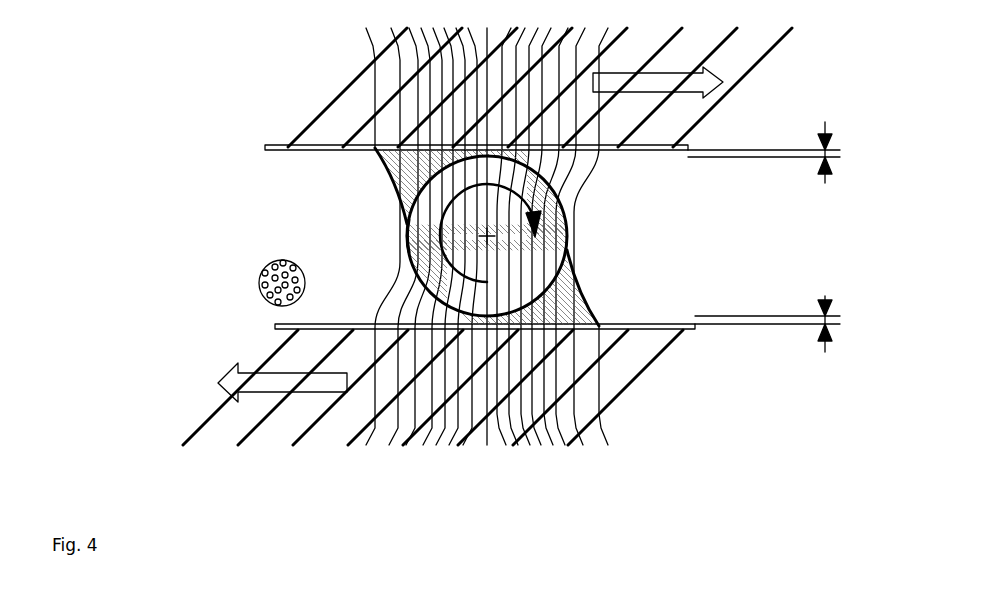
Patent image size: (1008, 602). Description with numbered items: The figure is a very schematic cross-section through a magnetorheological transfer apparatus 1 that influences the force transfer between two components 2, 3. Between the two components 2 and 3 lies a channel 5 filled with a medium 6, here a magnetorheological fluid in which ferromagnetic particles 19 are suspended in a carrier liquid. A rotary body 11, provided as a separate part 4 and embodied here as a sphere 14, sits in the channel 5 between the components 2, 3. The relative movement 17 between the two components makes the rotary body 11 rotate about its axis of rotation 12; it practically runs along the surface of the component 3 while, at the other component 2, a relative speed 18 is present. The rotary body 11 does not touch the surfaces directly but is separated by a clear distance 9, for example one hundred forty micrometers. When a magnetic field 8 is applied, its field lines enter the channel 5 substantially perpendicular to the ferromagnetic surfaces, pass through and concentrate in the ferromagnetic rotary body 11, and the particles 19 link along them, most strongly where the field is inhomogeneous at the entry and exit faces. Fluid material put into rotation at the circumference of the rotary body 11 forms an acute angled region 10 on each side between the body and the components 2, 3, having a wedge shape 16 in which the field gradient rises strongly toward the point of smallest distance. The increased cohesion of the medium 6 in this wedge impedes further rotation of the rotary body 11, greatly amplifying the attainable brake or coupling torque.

The magnetorheological transfer apparatus 1 is at (226, 92).
The component 2 is at (652, 358).
The component 3 is at (682, 108).
The separate part 4 is at (562, 226).
The channel 5 is at (278, 197).
The medium 6 is at (235, 274).
The magnetic field 8 is at (377, 80).
The clear distance 9 is at (838, 152).
The acute angled region 10 is at (372, 166).
The rotary body 11 is at (546, 205).
The axis of rotation 12 is at (493, 231).
The sphere 14 is at (410, 243).
The wedge-shaped region 16 is at (408, 168).
The relative movement 17 is at (736, 78).
The relative speed 18 is at (268, 380).
The ferromagnetic particles 19 is at (263, 285).